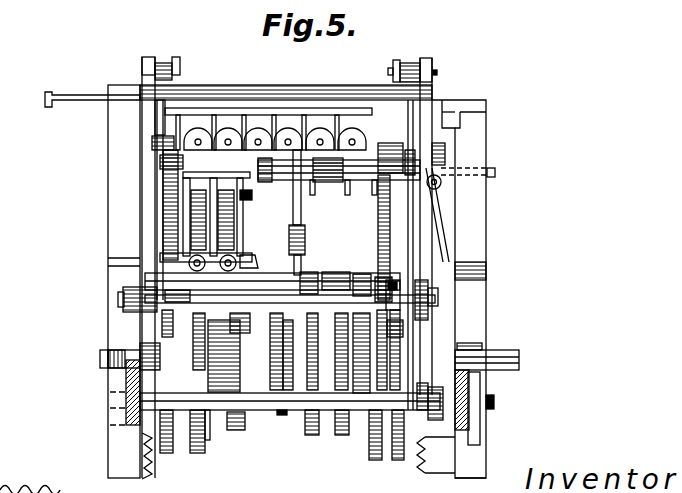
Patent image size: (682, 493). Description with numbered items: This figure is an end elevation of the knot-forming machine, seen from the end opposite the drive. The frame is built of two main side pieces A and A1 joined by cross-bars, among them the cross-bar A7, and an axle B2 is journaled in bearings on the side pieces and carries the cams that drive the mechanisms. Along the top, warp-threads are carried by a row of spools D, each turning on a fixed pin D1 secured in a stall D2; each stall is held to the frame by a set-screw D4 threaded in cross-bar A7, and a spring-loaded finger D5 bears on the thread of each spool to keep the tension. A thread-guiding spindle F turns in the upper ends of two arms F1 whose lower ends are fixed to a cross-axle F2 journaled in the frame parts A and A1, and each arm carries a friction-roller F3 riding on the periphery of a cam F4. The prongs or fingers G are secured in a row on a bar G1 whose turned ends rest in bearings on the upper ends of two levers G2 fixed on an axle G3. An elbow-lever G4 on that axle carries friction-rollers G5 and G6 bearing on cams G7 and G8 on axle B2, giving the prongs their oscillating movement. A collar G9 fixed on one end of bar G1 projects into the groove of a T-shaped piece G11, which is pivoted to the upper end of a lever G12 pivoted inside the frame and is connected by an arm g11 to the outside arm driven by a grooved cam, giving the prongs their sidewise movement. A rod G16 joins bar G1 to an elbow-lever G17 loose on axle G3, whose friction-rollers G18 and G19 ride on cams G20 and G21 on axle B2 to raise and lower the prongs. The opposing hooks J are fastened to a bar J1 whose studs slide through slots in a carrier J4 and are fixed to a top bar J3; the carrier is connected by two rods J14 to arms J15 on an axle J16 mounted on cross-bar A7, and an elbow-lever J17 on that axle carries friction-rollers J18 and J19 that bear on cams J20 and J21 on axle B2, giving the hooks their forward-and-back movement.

The main side piece A is at (482, 152).
The main side piece A1 is at (115, 157).
The cross-bar A7 is at (248, 268).
The axle B2 is at (268, 360).
The spool D is at (198, 204).
The fixed pin D1 is at (250, 203).
The stall D2 is at (212, 168).
The set-screw D4 is at (188, 258).
The finger D5 is at (195, 238).
The thread-guiding spindle F is at (325, 182).
The arm F1 is at (152, 230).
The cross-axle F2 is at (205, 440).
The friction-roller F3 is at (158, 322).
The cam F4 is at (167, 454).
The prongs or fingers G is at (210, 130).
The bar G1 is at (215, 176).
The lever G2 is at (165, 195).
The axle G3 is at (255, 288).
The elbow-lever G4 is at (358, 274).
The friction-roller G5 is at (384, 277).
The friction-roller G6 is at (336, 345).
The cam G7 is at (368, 450).
The cam G8 is at (343, 437).
The collar G9 is at (440, 148).
The T-shaped piece G11 is at (441, 181).
The arm g11 is at (495, 173).
The lever G12 is at (456, 215).
The rod G16 is at (294, 205).
The elbow-lever G17 is at (310, 273).
The friction-roller G18 is at (332, 274).
The friction-roller G19 is at (275, 330).
The cam G20 is at (312, 436).
The cam G21 is at (281, 417).
The hooks J is at (272, 126).
The bar J1 is at (252, 106).
The top bar J3 is at (66, 95).
The carrier J4 is at (446, 107).
The rod J14 is at (165, 62).
The arm J15 is at (420, 122).
The axle J16 is at (123, 295).
The elbow-lever J17 is at (220, 284).
The friction-roller J18 is at (190, 322).
The friction-roller J19 is at (247, 325).
The cam J20 is at (197, 454).
The cam J21 is at (247, 435).